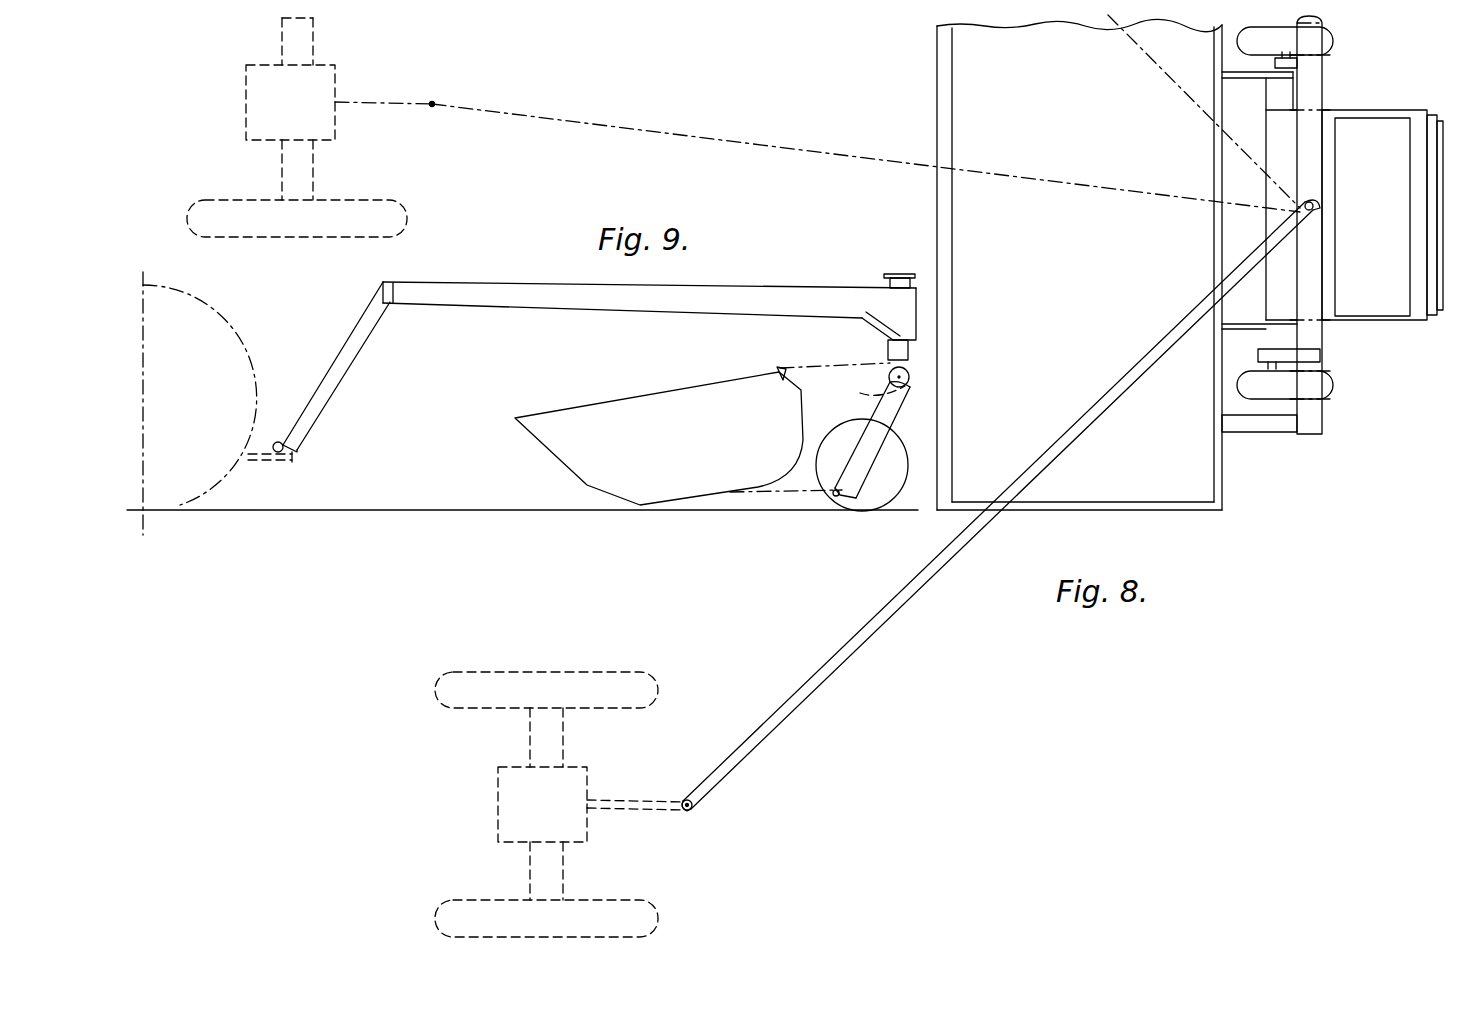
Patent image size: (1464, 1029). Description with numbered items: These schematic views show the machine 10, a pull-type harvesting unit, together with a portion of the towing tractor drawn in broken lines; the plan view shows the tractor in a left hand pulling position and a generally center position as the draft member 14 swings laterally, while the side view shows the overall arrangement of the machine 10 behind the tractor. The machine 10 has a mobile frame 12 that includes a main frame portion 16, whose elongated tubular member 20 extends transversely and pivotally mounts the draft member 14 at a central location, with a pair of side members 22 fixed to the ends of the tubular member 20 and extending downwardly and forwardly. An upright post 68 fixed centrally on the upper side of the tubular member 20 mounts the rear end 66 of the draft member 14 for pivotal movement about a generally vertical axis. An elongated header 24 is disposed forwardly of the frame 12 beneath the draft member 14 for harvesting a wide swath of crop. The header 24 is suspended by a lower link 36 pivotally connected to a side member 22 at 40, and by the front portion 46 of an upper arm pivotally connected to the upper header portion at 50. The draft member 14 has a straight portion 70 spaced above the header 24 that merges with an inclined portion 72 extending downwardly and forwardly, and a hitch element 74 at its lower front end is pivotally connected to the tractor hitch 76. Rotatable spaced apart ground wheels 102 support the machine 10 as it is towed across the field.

In FIG. 9, the machine 10 is at (818, 248).
In FIG. 8, the machine 10 is at (1350, 401).
In FIG. 8, the mobile frame 12 is at (1332, 245).
In FIG. 9, the draft member 14 is at (705, 286).
In FIG. 8, the draft member 14 is at (668, 131).
In FIG. 9, the main frame portion 16 is at (912, 383).
In FIG. 8, the main frame portion 16 is at (1322, 416).
In FIG. 9, the tubular member 20 is at (882, 393).
In FIG. 8, the tubular member 20 is at (1322, 332).
In FIG. 9, the side members 22 is at (870, 410).
In FIG. 8, the side members 22 is at (1245, 432).
In FIG. 9, the header 24 is at (630, 403).
In FIG. 8, the header 24 is at (1148, 512).
In FIG. 9, the link 36 is at (790, 497).
In FIG. 9, the pivot connection 40 is at (838, 496).
In FIG. 9, the front portion 46 is at (802, 366).
In FIG. 9, the pivot connection 50 is at (778, 368).
In FIG. 9, the rear end 66 is at (919, 312).
In FIG. 9, the upright post 68 is at (896, 272).
In FIG. 8, the upright post 68 is at (1318, 212).
In FIG. 9, the straight portion 70 is at (540, 306).
In FIG. 9, the inclined portion 72 is at (356, 359).
In FIG. 9, the hitch element 74 is at (280, 441).
In FIG. 8, the hitch element 74 is at (435, 101).
In FIG. 9, the tractor hitch 76 is at (272, 460).
In FIG. 8, the tractor hitch 76 is at (378, 98).
In FIG. 9, the ground wheels 102 is at (914, 500).
In FIG. 8, the ground wheels 102 is at (1335, 384).